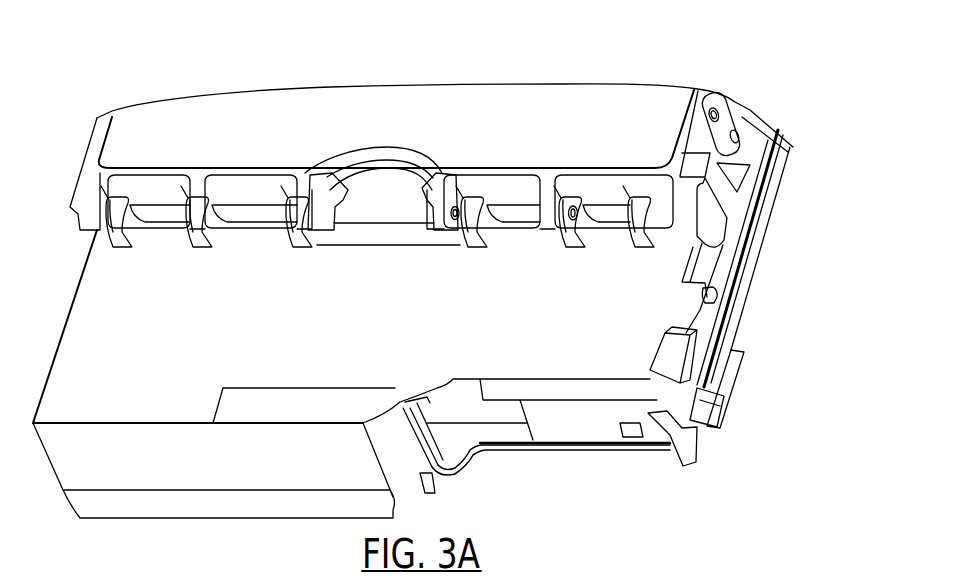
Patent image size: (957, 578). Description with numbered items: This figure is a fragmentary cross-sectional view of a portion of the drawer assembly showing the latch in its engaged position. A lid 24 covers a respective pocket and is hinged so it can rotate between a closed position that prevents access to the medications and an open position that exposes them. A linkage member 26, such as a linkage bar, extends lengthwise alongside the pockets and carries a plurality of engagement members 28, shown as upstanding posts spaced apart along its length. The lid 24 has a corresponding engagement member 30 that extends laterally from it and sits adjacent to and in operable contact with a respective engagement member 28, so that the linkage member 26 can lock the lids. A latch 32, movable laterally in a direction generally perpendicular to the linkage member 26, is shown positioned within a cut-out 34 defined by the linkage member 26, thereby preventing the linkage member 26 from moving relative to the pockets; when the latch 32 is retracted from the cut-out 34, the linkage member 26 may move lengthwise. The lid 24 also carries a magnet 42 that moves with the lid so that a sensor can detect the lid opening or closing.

The lid 24 is at (448, 110).
The magnet 42 is at (714, 97).
The engagement member 28 is at (713, 170).
The engagement member 30 is at (712, 218).
The linkage member 26 is at (703, 356).
The cut-out 34 is at (690, 389).
The latch 32 is at (597, 432).